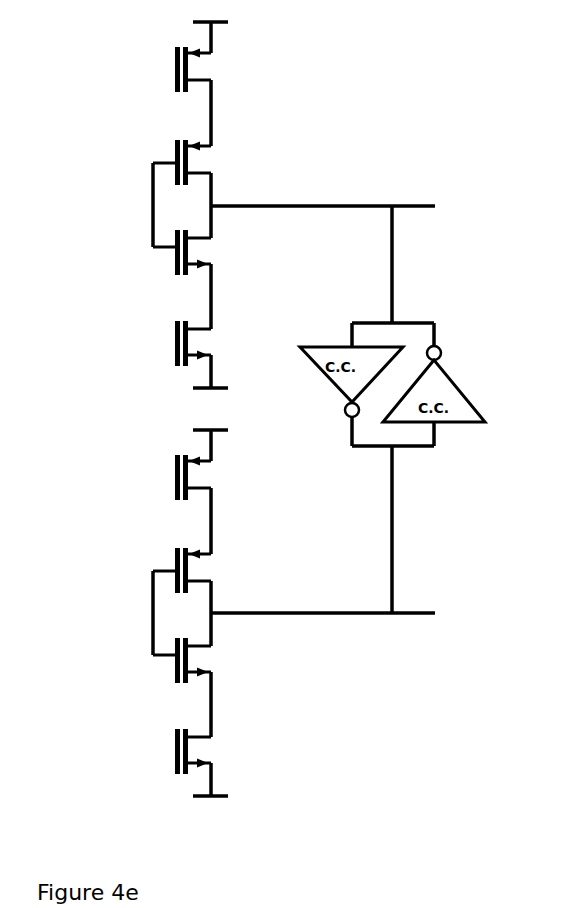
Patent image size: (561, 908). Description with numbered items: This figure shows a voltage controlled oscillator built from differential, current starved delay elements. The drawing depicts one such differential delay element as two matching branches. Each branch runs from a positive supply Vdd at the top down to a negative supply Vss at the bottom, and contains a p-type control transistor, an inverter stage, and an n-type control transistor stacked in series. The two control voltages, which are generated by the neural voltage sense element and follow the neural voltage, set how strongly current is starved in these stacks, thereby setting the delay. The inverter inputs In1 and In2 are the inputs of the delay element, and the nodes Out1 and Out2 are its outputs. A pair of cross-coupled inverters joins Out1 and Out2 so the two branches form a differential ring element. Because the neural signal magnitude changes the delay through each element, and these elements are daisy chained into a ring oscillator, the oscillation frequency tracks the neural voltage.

The positive supply rail Vdd is at (236, 223).
The negative supply rail Vss is at (235, 589).
The first delay element input In1 is at (153, 206).
The second delay element input In2 is at (153, 613).
The first delay element output Out1 is at (354, 200).
The second delay element output Out2 is at (354, 608).